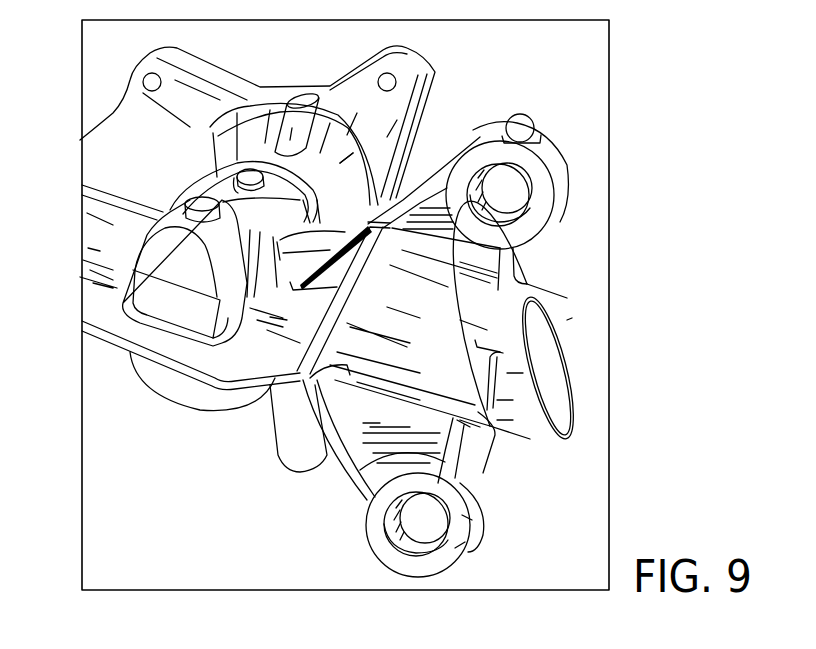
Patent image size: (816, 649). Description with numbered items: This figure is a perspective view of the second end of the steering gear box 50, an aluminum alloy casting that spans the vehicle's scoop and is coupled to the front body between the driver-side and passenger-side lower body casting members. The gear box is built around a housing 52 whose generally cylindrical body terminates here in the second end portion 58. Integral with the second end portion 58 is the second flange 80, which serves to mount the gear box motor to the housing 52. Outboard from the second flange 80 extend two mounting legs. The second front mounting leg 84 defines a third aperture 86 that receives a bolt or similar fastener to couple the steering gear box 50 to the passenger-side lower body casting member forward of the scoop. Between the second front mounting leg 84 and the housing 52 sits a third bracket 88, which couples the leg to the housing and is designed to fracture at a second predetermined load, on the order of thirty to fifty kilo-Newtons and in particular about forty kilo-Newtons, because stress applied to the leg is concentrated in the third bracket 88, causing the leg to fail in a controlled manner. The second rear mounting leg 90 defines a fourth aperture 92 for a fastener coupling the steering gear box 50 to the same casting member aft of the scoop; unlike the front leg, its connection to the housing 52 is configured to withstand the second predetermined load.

The steering gear box 50 is at (642, 90).
The housing 52 is at (450, 331).
The second end portion 58 is at (232, 472).
The second flange 80 is at (430, 66).
The second front mounting leg 84 is at (368, 517).
The third aperture 86 is at (420, 517).
The third bracket 88 is at (428, 447).
The second rear mounting leg 90 is at (558, 168).
The fourth aperture 92 is at (513, 188).